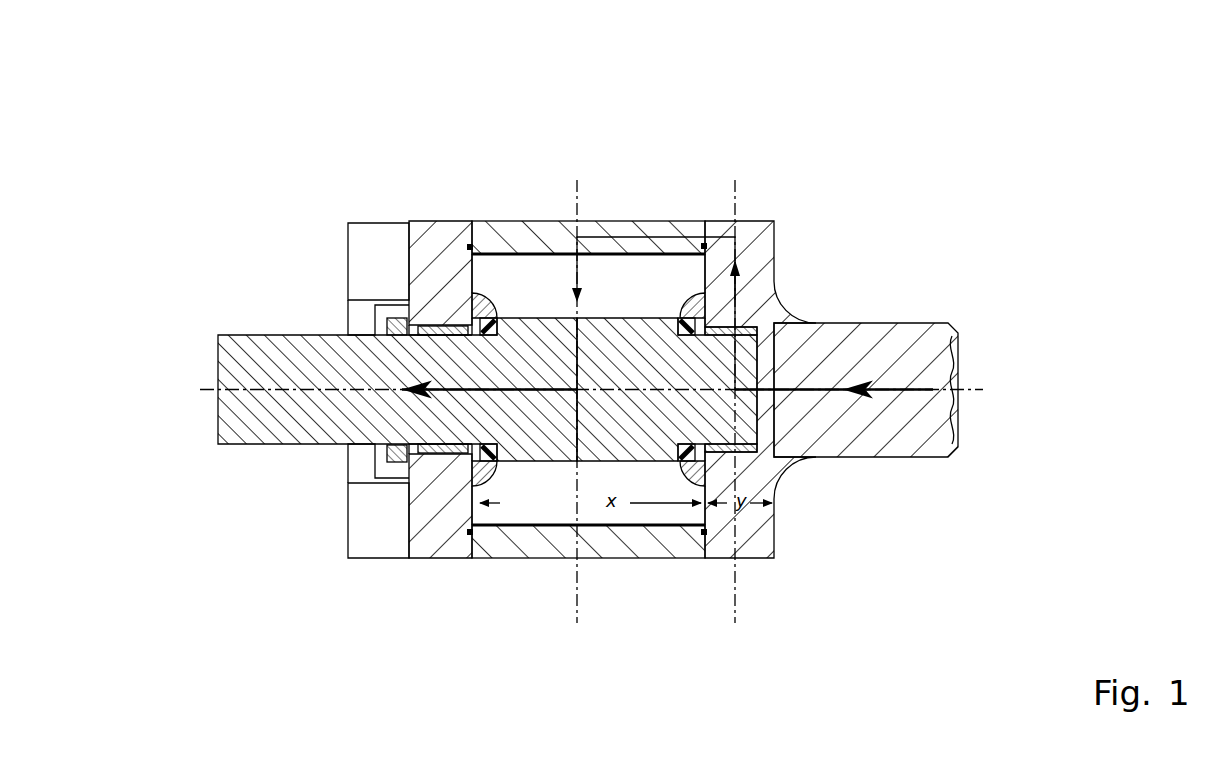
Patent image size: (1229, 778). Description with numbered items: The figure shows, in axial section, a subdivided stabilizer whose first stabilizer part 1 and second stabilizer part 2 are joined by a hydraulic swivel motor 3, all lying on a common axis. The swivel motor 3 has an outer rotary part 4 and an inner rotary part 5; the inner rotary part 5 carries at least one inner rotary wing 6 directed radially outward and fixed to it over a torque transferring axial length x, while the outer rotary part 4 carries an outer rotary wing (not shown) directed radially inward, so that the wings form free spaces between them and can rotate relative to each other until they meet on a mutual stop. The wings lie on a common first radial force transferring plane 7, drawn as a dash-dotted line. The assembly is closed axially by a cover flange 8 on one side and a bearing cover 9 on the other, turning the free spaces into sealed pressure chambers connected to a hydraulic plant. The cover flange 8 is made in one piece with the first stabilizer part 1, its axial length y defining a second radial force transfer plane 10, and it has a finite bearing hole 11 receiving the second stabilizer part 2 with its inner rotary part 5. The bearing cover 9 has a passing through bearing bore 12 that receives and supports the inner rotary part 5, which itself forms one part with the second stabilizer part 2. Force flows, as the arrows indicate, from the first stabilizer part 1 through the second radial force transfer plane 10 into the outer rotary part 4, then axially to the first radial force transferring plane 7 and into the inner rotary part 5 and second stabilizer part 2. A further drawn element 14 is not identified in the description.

The first stabilizer part 1 is at (898, 347).
The second stabilizer part 2 is at (265, 369).
The hydraulic swivel motor 3 is at (776, 56).
The outer rotary part 4 is at (572, 232).
The inner rotary part 5 is at (608, 285).
The inner rotary wing 6 is at (525, 279).
The first radial force transferring plane 7 is at (578, 608).
The cover flange 8 is at (755, 253).
The bearing cover 9 is at (437, 251).
The second radial force transfer plane 10 is at (735, 608).
The finite bearing hole 11 is at (748, 393).
The passing through bearing bore 12 is at (408, 297).
The sleeve 14 is at (540, 545).